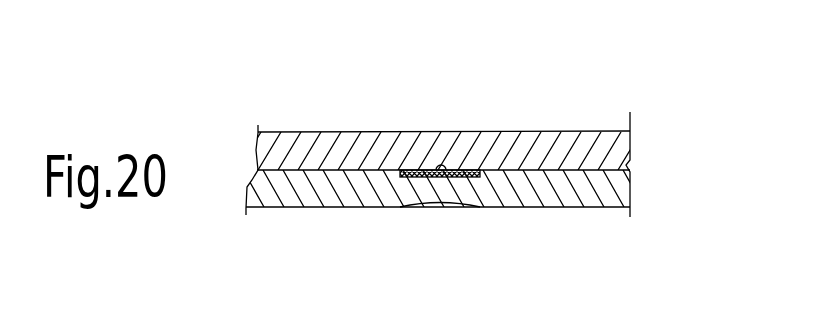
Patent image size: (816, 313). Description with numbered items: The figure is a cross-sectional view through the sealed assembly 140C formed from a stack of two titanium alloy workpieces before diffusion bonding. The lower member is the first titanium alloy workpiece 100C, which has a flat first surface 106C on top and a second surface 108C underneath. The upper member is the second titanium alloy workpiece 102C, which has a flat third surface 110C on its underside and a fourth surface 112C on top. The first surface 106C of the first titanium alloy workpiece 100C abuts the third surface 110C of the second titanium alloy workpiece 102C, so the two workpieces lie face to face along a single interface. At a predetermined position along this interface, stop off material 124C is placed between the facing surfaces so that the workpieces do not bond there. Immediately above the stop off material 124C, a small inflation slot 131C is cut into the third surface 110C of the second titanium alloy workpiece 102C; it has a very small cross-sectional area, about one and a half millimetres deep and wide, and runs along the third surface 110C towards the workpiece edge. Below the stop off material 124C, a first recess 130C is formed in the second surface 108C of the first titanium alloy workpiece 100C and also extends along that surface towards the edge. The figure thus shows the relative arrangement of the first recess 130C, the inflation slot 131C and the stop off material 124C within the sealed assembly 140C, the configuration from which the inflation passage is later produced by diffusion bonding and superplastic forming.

The sealed assembly 140C is at (605, 102).
The fourth surface 112C is at (577, 131).
The second titanium alloy workpiece 102C is at (602, 152).
The first titanium alloy workpiece 100C is at (610, 190).
The first surface 106C is at (295, 172).
The third surface 110C is at (340, 171).
The second surface 108C is at (557, 209).
The stop off material 124C is at (462, 170).
The inflation slot 131C is at (439, 164).
The first recess 130C is at (447, 208).